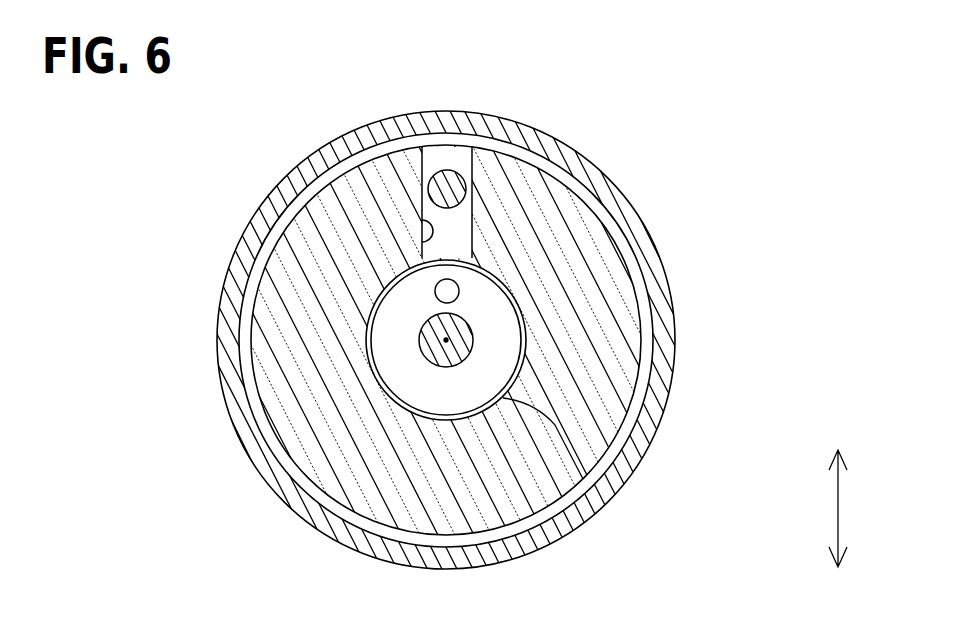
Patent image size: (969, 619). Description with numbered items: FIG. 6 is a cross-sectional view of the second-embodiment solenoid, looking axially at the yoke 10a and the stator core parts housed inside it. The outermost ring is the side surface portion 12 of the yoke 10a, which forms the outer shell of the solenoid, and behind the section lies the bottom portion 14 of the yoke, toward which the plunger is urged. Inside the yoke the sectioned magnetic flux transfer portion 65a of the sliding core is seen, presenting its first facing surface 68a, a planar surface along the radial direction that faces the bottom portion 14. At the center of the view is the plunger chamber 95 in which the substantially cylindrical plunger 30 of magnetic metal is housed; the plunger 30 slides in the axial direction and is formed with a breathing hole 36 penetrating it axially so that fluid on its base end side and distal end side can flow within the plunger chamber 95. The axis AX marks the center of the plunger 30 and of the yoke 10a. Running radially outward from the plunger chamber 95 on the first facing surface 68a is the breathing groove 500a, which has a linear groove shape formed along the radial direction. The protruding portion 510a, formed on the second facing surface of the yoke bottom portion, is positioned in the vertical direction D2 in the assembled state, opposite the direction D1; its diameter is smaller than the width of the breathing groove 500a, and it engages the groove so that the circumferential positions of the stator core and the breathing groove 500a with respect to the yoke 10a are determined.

The yoke 10a is at (515, 340).
The side surface portion 12 is at (667, 380).
The plunger chamber 95 is at (610, 495).
The magnetic flux transfer portion 65a is at (376, 340).
The first facing surface 68a is at (322, 260).
The breathing groove 500a is at (420, 223).
The protruding portion 510a is at (462, 192).
The plunger 30 is at (402, 380).
The breathing hole 36 is at (455, 284).
The bottom portion 14 is at (462, 327).
The axis AX is at (446, 340).
The direction D1 is at (838, 509).
The vertical direction D2 is at (838, 509).